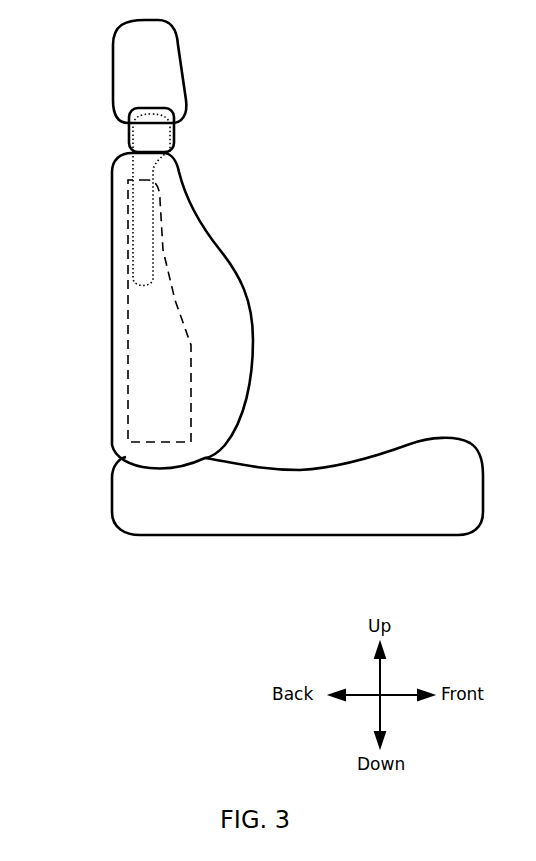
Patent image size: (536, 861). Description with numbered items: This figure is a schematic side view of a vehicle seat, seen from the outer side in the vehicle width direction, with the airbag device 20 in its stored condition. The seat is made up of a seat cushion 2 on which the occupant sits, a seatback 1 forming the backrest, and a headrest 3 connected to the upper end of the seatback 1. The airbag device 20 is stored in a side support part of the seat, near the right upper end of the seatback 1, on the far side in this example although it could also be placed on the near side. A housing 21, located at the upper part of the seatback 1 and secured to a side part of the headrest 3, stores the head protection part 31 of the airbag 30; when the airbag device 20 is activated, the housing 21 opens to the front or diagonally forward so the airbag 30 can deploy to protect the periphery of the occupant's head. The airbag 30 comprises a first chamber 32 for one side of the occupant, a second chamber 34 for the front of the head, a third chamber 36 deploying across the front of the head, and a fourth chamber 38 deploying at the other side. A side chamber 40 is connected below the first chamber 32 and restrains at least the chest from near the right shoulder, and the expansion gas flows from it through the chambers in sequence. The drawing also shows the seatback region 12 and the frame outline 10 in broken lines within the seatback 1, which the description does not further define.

The seatback 1 is at (256, 277).
The seat cushion 2 is at (443, 436).
The headrest 3 is at (113, 65).
The seat back frame 10 is at (128, 317).
The seat back 12 is at (252, 312).
The airbag device 20 is at (218, 162).
The housing 21 is at (167, 108).
The airbag 30 is at (270, 200).
The head protection part 31 is at (270, 133).
The first chamber 32 is at (151, 133).
The second chamber 34 is at (151, 133).
The third chamber 36 is at (151, 133).
The fourth chamber 38 is at (163, 136).
The side chamber 40 is at (150, 245).